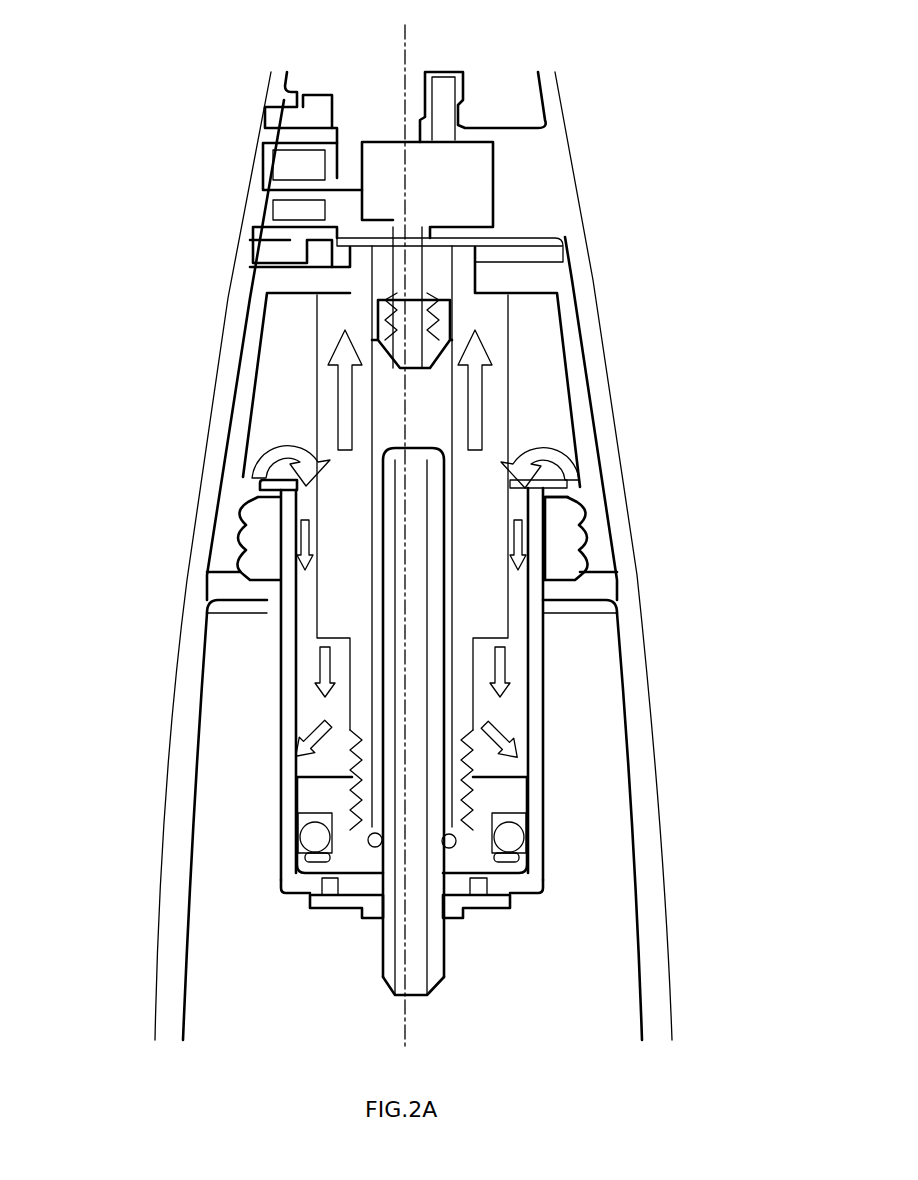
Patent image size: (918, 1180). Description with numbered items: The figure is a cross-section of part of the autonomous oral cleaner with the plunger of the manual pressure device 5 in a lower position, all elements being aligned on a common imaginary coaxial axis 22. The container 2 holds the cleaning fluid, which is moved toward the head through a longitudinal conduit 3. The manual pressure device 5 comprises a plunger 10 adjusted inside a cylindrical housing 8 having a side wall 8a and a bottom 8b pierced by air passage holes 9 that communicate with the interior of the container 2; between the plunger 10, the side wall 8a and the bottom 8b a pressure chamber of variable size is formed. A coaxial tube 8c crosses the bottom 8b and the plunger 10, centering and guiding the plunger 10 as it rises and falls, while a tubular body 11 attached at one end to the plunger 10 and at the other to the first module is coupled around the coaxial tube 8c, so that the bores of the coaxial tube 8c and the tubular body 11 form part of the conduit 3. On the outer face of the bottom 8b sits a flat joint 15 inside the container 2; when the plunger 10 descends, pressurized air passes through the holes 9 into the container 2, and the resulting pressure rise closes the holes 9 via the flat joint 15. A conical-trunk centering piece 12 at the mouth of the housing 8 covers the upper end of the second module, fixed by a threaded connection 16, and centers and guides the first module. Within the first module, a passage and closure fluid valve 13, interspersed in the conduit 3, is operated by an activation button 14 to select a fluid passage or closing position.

The container 2 is at (596, 908).
The longitudinal conduit 3 is at (560, 405).
The manual pressure device 5 is at (420, 467).
The cylindrical housing 8 is at (556, 728).
The side wall 8a is at (533, 763).
The bottom 8b is at (525, 888).
The coaxial tube 8c is at (437, 970).
The holes 9 is at (477, 888).
The plunger 10 is at (508, 790).
The tubular body 11 is at (348, 588).
The centering piece 12 is at (590, 473).
The passage and closure fluid valve 13 is at (388, 182).
The activation button 14 is at (270, 178).
The flat joint 15 is at (500, 908).
The threaded connection 16 is at (594, 549).
The coaxial axis 22 is at (403, 43).